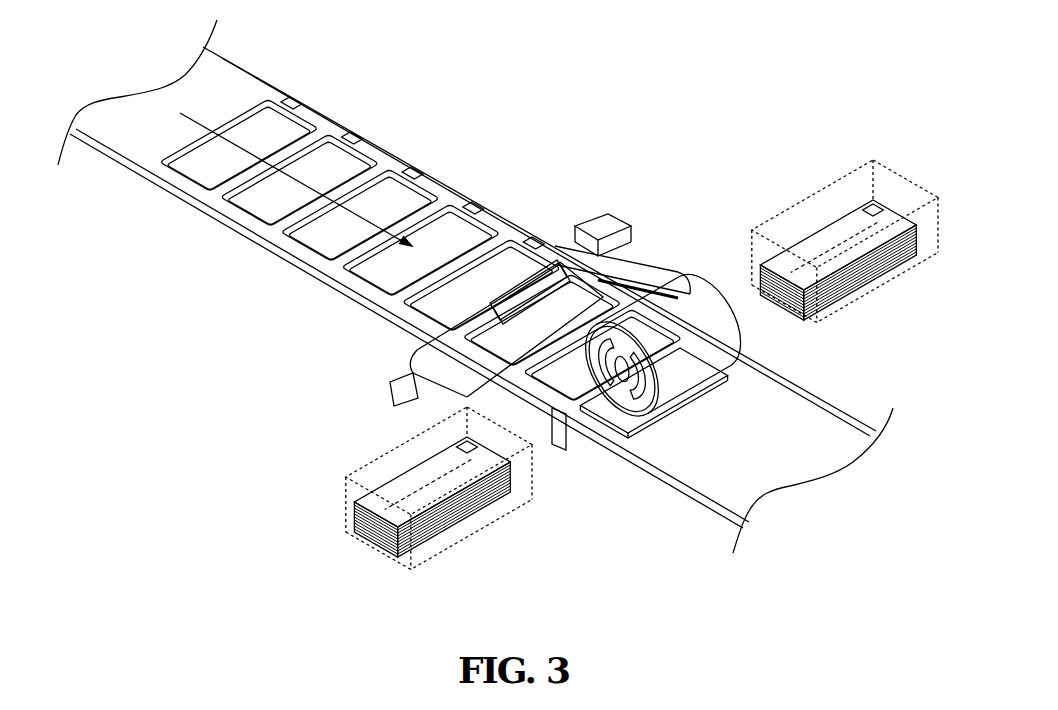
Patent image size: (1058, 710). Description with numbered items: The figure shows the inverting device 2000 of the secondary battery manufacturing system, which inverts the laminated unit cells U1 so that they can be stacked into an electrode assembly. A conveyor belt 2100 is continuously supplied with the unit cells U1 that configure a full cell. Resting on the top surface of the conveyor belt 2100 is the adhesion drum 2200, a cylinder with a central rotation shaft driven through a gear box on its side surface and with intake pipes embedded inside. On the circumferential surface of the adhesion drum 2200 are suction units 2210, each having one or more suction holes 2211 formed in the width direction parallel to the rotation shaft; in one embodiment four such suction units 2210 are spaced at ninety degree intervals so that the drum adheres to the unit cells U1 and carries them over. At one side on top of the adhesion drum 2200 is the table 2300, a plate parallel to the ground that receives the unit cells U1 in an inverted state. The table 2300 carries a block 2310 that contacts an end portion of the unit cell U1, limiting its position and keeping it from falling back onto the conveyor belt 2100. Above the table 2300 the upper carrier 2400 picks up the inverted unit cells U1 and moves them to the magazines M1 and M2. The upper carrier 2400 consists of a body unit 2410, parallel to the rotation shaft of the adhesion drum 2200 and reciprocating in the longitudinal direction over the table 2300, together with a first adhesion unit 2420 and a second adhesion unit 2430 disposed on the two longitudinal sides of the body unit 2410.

The inverting device 2000 is at (590, 110).
The conveyor belt 2100 is at (298, 100).
The unit cell U1 is at (447, 235).
The adhesion drum 2200 is at (738, 334).
The suction unit 2210 is at (698, 290).
The suction hole 2211 is at (668, 392).
The table 2300 is at (678, 248).
The block 2310 is at (566, 452).
The upper carrier 2400 is at (392, 354).
The body unit 2410 is at (587, 232).
The first adhesion unit 2420 is at (391, 385).
The second adhesion unit 2430 is at (640, 235).
The magazine M1 is at (882, 307).
The magazine M2 is at (367, 560).